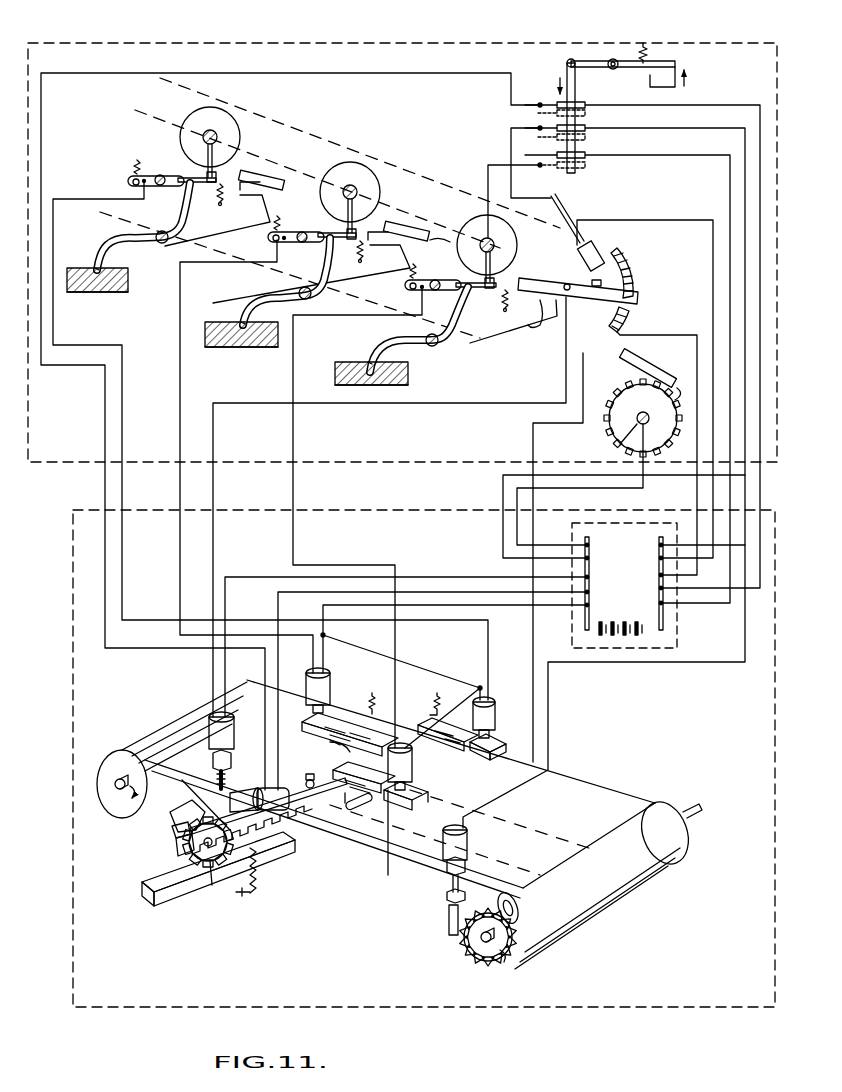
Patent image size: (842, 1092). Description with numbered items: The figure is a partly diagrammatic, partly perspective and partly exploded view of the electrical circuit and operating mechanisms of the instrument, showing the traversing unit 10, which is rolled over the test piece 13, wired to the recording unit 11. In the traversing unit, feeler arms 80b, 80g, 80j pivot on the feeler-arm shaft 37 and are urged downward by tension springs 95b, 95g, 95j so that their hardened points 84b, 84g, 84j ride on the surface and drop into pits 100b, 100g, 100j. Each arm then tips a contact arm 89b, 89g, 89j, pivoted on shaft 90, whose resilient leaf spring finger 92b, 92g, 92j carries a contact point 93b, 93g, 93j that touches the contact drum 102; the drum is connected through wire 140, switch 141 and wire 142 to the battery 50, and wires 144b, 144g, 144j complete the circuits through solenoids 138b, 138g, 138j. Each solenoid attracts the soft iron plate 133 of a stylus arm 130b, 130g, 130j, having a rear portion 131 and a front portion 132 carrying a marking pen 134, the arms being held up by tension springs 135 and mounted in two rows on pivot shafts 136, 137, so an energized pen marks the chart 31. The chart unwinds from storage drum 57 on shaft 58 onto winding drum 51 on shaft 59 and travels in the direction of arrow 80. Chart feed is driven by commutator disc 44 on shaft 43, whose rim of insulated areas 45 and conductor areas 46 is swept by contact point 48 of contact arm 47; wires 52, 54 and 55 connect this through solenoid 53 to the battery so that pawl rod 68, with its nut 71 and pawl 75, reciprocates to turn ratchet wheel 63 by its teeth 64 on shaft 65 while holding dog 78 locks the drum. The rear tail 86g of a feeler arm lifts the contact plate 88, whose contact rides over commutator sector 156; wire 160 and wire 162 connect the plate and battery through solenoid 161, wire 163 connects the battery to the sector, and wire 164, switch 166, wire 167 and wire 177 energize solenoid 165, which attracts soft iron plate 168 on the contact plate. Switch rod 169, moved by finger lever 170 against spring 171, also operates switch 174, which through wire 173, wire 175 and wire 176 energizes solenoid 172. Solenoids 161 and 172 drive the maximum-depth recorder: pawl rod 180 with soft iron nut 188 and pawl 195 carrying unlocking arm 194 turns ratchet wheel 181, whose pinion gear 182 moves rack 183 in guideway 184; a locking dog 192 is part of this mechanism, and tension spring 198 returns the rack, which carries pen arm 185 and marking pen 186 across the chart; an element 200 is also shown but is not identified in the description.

The traversing unit 10 is at (365, 42).
The recording unit 11 is at (478, 1009).
The test piece 13 is at (96, 295).
The chart 31 is at (615, 800).
The feeler-arm shaft 37 is at (162, 230).
The shaft 43 is at (643, 418).
The commutator disc 44 is at (618, 446).
The insulated areas 45 is at (632, 382).
The conductor areas 46 is at (612, 430).
The contact arm 47 is at (658, 370).
The contact point 48 is at (683, 380).
The battery 50 is at (623, 620).
The chart winding drum 51 is at (683, 840).
The conductor wire 52 is at (533, 437).
The solenoid 53 is at (467, 842).
The conductor wire 54 is at (548, 714).
The conductor wire 55 is at (643, 488).
The storage drum 57 is at (120, 818).
The shaft 58 is at (114, 788).
The shaft 59 is at (690, 808).
The ratchet wheel 63 is at (484, 962).
The ratchet teeth 64 is at (506, 962).
The shaft 65 is at (480, 945).
The pawl rod 68 is at (467, 885).
The nut 71 is at (449, 884).
The pawl 75 is at (448, 932).
The holding dog 78 is at (520, 902).
The arrow 80 is at (368, 853).
The feeler arm 80b is at (427, 363).
The feeler arm 80g is at (250, 290).
The feeler arm 80j is at (148, 252).
The hardened point 84b is at (372, 386).
The hardened point 84g is at (255, 348).
The hardened point 84j is at (112, 293).
The rear tail portion 86g is at (446, 242).
The contact plate 88 is at (263, 172).
The contact arm 89b is at (433, 275).
The contact arm 89g is at (305, 231).
The contact arm 89j is at (165, 176).
The shaft 90 is at (337, 238).
The resilient leaf spring finger 92b is at (503, 298).
The resilient leaf spring finger 92g is at (347, 246).
The resilient leaf spring finger 92j is at (210, 183).
The contact point 93b is at (489, 282).
The contact point 93g is at (353, 231).
The contact point 93j is at (213, 176).
The tension spring 95b is at (513, 324).
The tension spring 95g is at (311, 267).
The tension spring 95j is at (217, 214).
The pit 100b is at (363, 386).
The pit 100g is at (238, 346).
The pit 100j is at (94, 268).
The contact drum 102 is at (196, 120).
The stylus arm 130b is at (395, 840).
The stylus arm 130g is at (352, 735).
The stylus arm 130j is at (462, 750).
The rear portion 131 is at (380, 795).
The front portion 132 is at (335, 768).
The soft iron plate 133 is at (418, 800).
The marking pen 134 is at (330, 742).
The helical tension springs 135 is at (432, 702).
The pivot shaft 136 is at (350, 808).
The pivot shaft 137 is at (304, 728).
The solenoid 138b is at (414, 784).
The solenoid 138g is at (342, 670).
The solenoid 138j is at (497, 704).
The wire 140 is at (489, 196).
The switch 141 is at (585, 158).
The wire 142 is at (730, 191).
The wire 144b is at (293, 440).
The wire 144g is at (180, 351).
The wire 144j is at (90, 199).
The commutator sector 156 is at (639, 270).
The wire 160 is at (213, 490).
The solenoid 161 is at (209, 733).
The wire 162 is at (255, 575).
The wire 163 is at (667, 335).
The wire 164 is at (557, 210).
The solenoid 165 is at (599, 250).
The switch 166 is at (585, 131).
The wire 167 is at (716, 128).
The soft iron plate 168 is at (594, 282).
The switch rod 169 is at (575, 85).
The finger lever 170 is at (632, 68).
The spring 171 is at (647, 54).
The solenoid 172 is at (252, 788).
The wire 173 is at (258, 67).
The switch 174 is at (585, 107).
The wire 175 is at (724, 105).
The wire 176 is at (278, 605).
The wire 177 is at (688, 220).
The pawl rod 180 is at (215, 778).
The ratchet wheel 181 is at (185, 858).
The pinion gear 182 is at (212, 886).
The rack 183 is at (155, 895).
The guideway 184 is at (186, 906).
The pen arm 185 is at (292, 810).
The marking pen 186 is at (310, 782).
The soft iron nut 188 is at (231, 762).
The locking dog 192 is at (172, 818).
The unlocking arm 194 is at (182, 780).
The pawl 195 is at (176, 832).
The tension spring 198 is at (257, 876).
The stop 200 is at (176, 846).